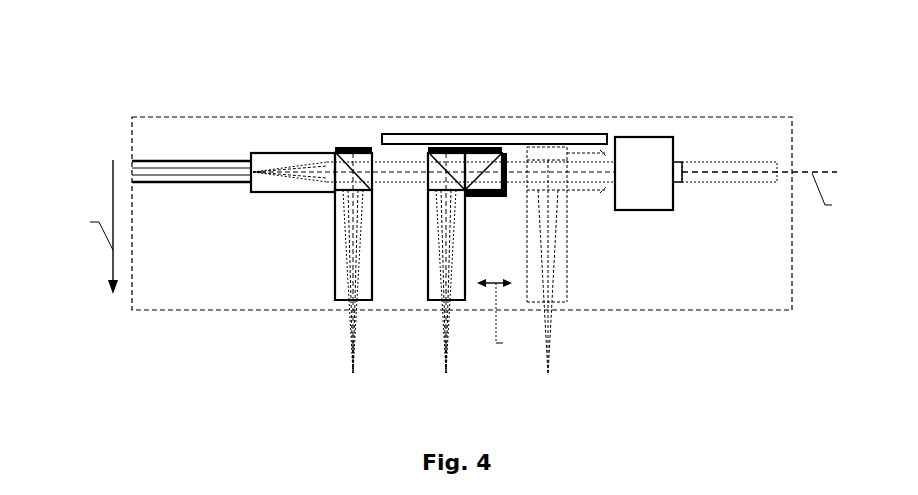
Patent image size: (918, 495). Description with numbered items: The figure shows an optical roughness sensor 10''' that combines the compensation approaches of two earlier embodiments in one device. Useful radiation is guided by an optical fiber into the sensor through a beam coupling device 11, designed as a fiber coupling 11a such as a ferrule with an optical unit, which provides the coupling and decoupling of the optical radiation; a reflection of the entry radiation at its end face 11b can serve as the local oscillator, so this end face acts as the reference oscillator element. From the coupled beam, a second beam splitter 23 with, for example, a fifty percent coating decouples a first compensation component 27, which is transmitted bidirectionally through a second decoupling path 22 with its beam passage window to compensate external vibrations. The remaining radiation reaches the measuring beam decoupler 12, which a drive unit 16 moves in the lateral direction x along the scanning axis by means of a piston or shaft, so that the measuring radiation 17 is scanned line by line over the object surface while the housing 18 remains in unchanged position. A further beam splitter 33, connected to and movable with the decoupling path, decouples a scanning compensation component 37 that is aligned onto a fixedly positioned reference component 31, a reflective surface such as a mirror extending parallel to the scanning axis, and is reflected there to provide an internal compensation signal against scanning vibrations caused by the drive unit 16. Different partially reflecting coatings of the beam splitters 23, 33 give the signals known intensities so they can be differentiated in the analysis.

The roughness sensor 10''' is at (458, 211).
The beam coupling device 11 is at (233, 206).
The fiber coupling 11a is at (191, 189).
The end face 11b is at (251, 162).
The measuring beam decoupler 12 is at (424, 226).
The drive unit 16 is at (664, 145).
The measuring radiation 17 is at (415, 336).
The housing 18 is at (474, 193).
The second decoupling path 22 is at (320, 226).
The second beam splitter 23 is at (331, 136).
The first compensation component 27 is at (323, 336).
The reference component 31 is at (494, 108).
The further beam splitter 33 is at (451, 136).
The scanning compensation component 37 is at (458, 122).